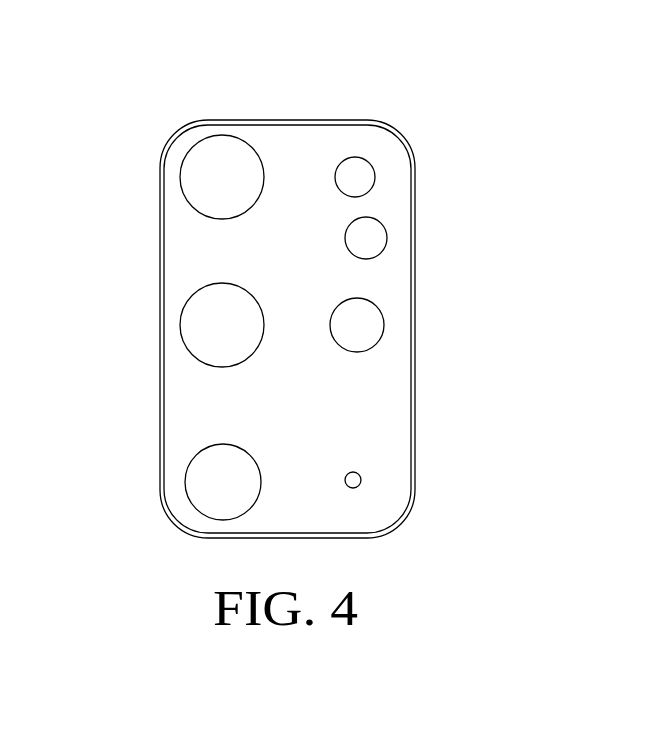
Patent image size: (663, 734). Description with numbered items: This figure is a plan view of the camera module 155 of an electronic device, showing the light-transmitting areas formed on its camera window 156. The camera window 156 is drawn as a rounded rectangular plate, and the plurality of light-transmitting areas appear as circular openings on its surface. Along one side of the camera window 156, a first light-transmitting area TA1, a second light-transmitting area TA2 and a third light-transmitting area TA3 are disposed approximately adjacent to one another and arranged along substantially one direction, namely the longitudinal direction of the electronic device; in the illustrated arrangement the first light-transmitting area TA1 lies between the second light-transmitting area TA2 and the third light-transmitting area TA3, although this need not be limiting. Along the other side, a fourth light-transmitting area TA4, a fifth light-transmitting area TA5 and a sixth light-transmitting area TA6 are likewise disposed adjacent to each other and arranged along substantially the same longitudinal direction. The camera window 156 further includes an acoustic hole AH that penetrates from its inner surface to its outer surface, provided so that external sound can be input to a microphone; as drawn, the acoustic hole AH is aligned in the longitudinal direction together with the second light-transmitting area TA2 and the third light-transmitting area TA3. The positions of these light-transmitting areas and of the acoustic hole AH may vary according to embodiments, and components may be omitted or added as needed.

The camera module 155 is at (313, 94).
The camera window 156 is at (375, 403).
The first light-transmitting area TA1 is at (371, 243).
The second light-transmitting area TA2 is at (365, 313).
The third light-transmitting area TA3 is at (362, 167).
The fourth light-transmitting area TA4 is at (205, 158).
The fifth light-transmitting area TA5 is at (203, 303).
The sixth light-transmitting area TA6 is at (200, 480).
The acoustic hole AH is at (362, 479).